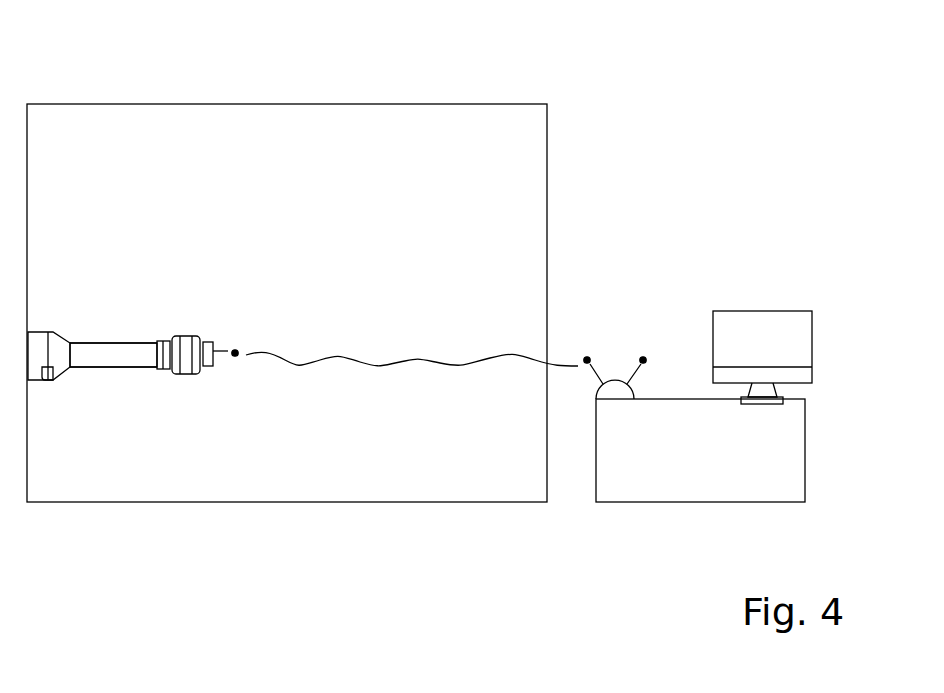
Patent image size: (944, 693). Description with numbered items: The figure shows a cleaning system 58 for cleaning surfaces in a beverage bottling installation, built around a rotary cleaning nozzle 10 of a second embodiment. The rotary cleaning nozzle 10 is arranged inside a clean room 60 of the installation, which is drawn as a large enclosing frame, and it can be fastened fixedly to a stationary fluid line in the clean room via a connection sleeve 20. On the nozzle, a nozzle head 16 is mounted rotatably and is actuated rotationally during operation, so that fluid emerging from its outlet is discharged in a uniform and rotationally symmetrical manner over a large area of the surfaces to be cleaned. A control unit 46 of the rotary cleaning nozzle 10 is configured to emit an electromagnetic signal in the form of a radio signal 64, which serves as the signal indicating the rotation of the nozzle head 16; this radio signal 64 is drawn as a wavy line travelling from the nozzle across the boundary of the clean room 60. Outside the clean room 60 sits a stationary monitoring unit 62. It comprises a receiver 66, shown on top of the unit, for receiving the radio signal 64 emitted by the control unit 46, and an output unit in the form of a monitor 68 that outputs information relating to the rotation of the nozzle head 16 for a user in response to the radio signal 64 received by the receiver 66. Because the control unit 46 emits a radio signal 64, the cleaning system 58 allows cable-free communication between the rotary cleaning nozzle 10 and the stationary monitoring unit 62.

The rotary cleaning nozzle 10 is at (103, 310).
The nozzle head 16 is at (185, 334).
The connection sleeve 20 is at (125, 352).
The control unit 46 is at (210, 356).
The cleaning system 58 is at (792, 237).
The clean room 60 is at (410, 104).
The stationary monitoring unit 62 is at (625, 506).
The radio signal 64 is at (445, 362).
The receiver 66 is at (614, 384).
The monitor 68 is at (793, 338).